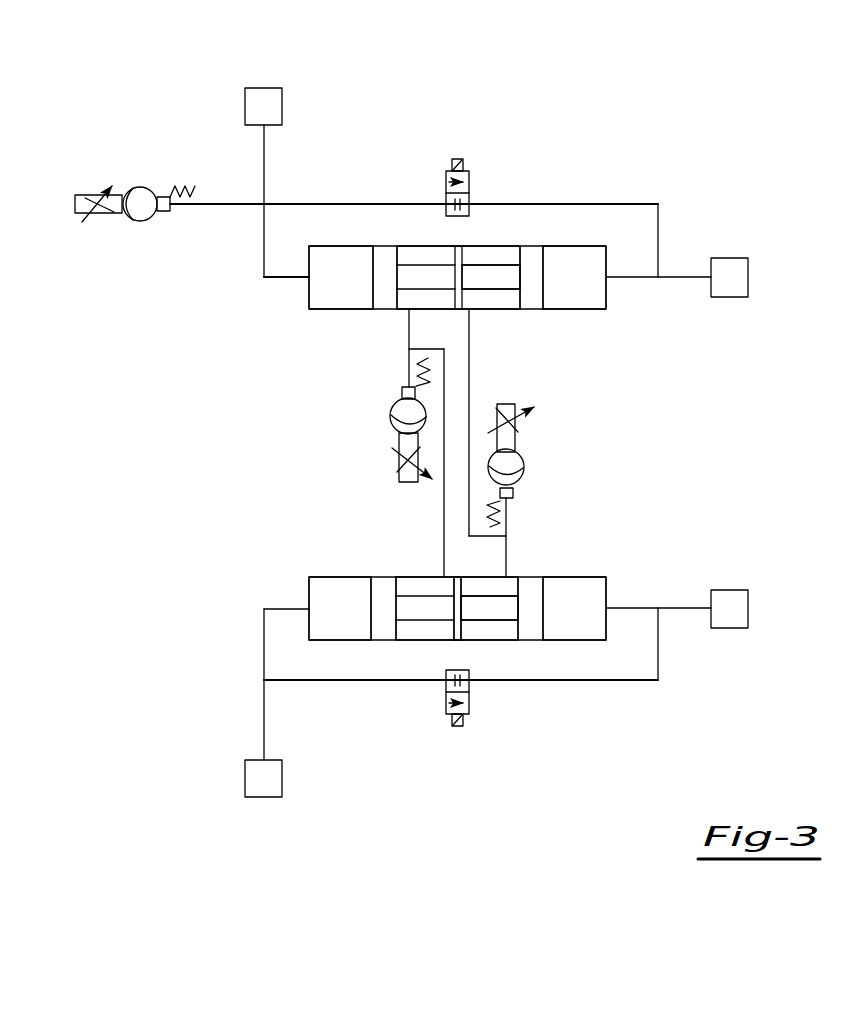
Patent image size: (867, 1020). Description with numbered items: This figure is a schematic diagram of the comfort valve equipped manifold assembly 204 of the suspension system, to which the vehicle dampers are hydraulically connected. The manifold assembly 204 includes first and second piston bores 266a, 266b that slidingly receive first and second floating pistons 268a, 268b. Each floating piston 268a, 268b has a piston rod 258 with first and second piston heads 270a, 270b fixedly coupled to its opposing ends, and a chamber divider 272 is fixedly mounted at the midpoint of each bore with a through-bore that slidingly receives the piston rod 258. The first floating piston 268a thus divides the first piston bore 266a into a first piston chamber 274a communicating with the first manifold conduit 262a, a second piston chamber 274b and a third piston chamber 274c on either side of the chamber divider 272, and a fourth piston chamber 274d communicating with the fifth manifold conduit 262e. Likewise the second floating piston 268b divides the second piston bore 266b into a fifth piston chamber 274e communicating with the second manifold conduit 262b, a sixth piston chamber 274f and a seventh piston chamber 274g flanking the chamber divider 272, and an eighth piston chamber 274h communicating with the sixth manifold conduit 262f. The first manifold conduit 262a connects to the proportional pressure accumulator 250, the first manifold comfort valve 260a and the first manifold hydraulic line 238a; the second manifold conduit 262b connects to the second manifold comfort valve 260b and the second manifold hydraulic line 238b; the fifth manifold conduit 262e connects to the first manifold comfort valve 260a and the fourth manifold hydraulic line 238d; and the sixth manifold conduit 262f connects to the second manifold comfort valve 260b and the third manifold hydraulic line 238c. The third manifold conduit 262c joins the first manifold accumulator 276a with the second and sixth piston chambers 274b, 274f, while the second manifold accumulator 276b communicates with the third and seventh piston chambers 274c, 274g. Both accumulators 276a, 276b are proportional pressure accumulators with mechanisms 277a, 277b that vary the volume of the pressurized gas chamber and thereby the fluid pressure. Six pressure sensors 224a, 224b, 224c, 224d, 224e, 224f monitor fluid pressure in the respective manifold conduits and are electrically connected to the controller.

The manifold assembly 204 is at (744, 104).
The proportional pressure accumulator 250 is at (130, 222).
The first manifold hydraulic line 238a is at (258, 88).
The second manifold hydraulic line 238b is at (263, 797).
The third manifold hydraulic line 238c is at (748, 608).
The fourth manifold hydraulic line 238d is at (748, 277).
The piston rod 258 is at (483, 272).
The first manifold comfort valve 260a is at (450, 157).
The second manifold comfort valve 260b is at (463, 729).
The first manifold conduit 262a is at (262, 152).
The second manifold conduit 262b is at (262, 740).
The third manifold conduit 262c is at (409, 330).
The fifth manifold conduit 262e is at (660, 233).
The sixth manifold conduit 262f is at (658, 640).
The first pressure sensor 224a is at (344, 203).
The second pressure sensor 224b is at (343, 684).
The third pressure sensor 224c is at (404, 368).
The fourth pressure sensor 224d is at (511, 517).
The fifth pressure sensor 224e is at (580, 204).
The sixth pressure sensor 224f is at (578, 686).
The first piston bore 266a is at (495, 225).
The second piston bore 266b is at (463, 633).
The first floating piston 268a is at (492, 299).
The second floating piston 268b is at (501, 631).
The first piston head 270a is at (383, 283).
The second piston head 270b is at (530, 281).
The chamber divider 272 is at (458, 312).
The first piston chamber 274a is at (357, 257).
The second piston chamber 274b is at (420, 255).
The third piston chamber 274c is at (500, 257).
The fourth piston chamber 274d is at (557, 257).
The fifth piston chamber 274e is at (333, 597).
The sixth piston chamber 274f is at (403, 628).
The seventh piston chamber 274g is at (498, 586).
The eighth piston chamber 274h is at (580, 628).
The first manifold accumulator 276a is at (358, 420).
The second manifold accumulator 276b is at (553, 450).
The mechanism 277a is at (399, 476).
The mechanism 277b is at (518, 422).